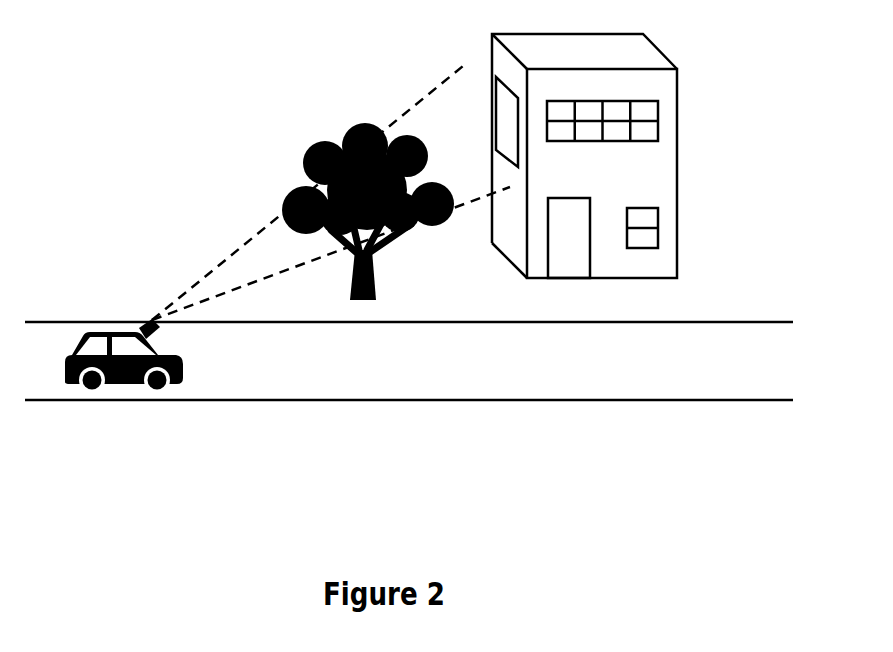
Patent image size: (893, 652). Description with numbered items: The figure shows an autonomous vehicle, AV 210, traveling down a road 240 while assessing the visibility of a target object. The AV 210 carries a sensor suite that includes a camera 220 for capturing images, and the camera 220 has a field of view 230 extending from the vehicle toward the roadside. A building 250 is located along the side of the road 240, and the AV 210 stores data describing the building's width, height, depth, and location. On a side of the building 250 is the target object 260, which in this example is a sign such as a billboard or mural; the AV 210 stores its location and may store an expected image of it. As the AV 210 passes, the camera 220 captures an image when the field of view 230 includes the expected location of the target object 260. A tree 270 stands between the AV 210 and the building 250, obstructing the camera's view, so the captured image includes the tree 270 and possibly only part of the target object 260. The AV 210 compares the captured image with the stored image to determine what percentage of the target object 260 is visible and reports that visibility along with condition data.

The AV 210 is at (188, 371).
The camera 220 is at (147, 321).
The field of view 230 is at (252, 263).
The road 240 is at (583, 390).
The building 250 is at (562, 156).
The target object 260 is at (502, 110).
The tree 270 is at (331, 140).